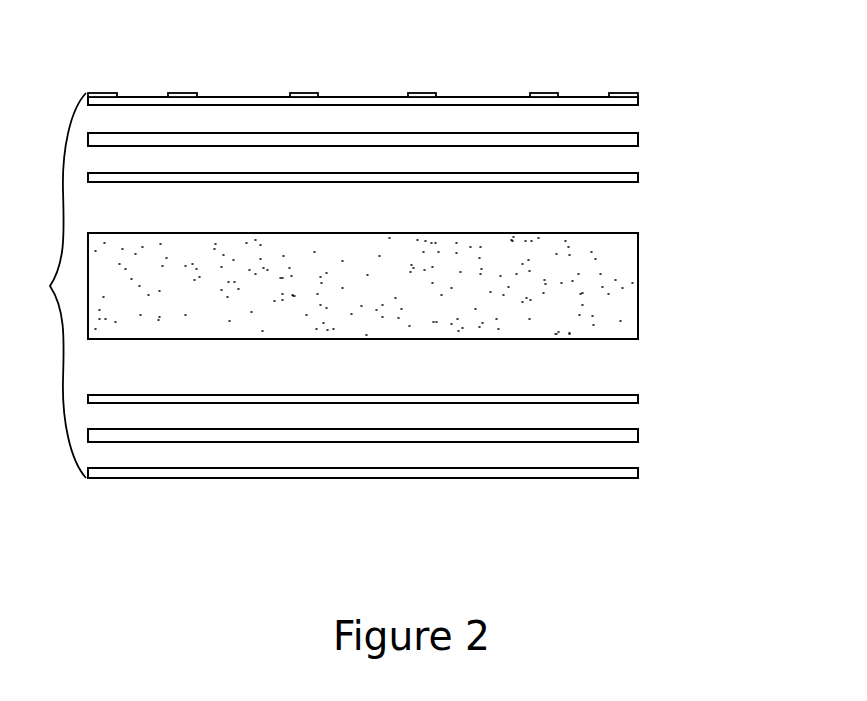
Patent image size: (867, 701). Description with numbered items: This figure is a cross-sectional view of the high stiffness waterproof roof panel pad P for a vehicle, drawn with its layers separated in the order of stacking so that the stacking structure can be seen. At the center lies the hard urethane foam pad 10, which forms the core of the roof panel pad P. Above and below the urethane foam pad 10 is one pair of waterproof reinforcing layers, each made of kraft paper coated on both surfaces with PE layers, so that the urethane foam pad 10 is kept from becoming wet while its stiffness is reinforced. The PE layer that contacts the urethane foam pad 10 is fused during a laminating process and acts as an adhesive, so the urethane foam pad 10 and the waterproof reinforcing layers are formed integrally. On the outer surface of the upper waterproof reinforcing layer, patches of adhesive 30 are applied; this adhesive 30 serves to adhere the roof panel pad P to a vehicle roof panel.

The roof panel pad P is at (53, 285).
The urethane foam pad 10 is at (588, 288).
The adhesive 30 is at (175, 93).